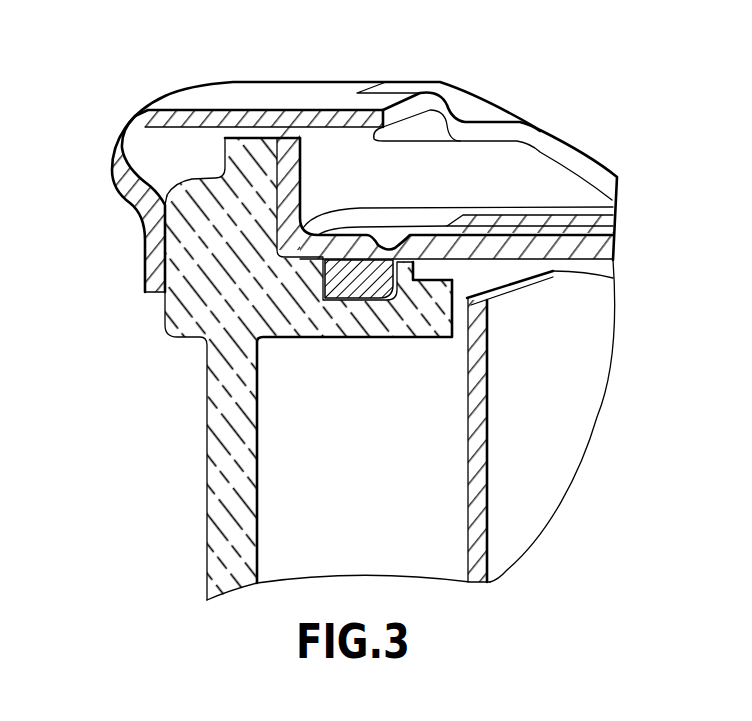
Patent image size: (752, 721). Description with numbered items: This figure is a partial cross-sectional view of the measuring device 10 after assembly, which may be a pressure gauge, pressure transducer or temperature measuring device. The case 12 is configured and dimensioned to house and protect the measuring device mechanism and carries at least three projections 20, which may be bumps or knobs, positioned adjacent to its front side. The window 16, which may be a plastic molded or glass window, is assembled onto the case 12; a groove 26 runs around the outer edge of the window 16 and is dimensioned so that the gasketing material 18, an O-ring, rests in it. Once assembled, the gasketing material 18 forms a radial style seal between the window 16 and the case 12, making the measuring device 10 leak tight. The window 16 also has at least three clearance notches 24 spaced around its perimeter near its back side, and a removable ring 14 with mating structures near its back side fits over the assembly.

The measuring device 10 is at (92, 65).
The case 12 is at (590, 245).
The removable ring 14 is at (265, 97).
The window 16 is at (197, 318).
The gasketing material 18 is at (348, 316).
The projections 20 is at (398, 258).
The clearance notches 24 is at (470, 298).
The groove 26 is at (408, 280).